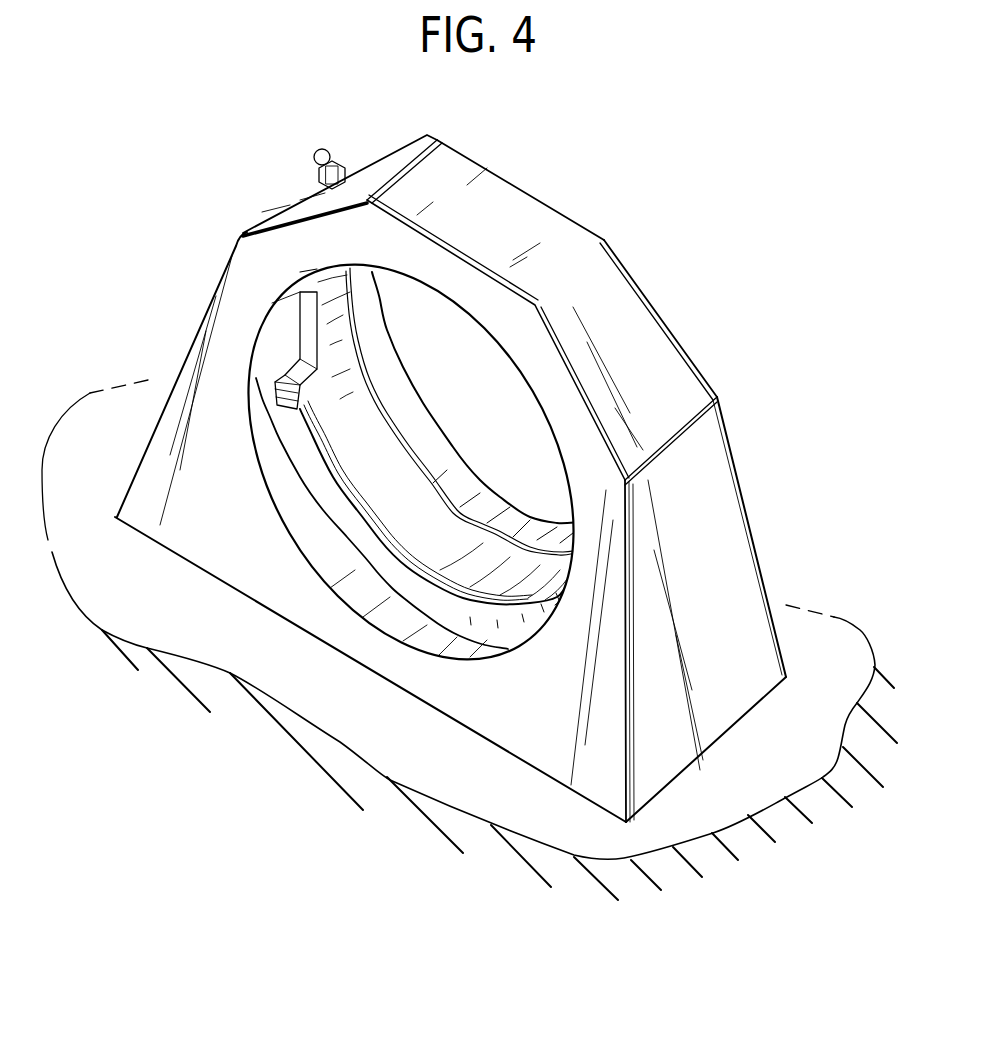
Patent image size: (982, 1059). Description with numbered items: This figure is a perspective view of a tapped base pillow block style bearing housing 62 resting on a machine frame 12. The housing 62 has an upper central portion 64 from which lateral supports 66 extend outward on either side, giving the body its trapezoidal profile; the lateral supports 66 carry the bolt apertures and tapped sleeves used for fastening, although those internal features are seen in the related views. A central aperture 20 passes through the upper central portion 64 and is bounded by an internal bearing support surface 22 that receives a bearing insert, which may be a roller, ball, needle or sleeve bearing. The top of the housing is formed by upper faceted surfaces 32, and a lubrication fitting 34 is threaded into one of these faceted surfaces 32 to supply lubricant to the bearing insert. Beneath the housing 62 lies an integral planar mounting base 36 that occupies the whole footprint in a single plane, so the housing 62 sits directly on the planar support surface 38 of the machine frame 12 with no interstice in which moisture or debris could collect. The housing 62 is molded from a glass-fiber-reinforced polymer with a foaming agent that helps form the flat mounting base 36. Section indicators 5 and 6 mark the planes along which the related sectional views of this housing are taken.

The machine frame 12 is at (217, 655).
The central aperture 20 is at (504, 422).
The internal bearing support surface 22 is at (318, 400).
The upper faceted surfaces 32 is at (393, 150).
The lubrication fitting 34 is at (326, 150).
The planar mounting base 36 is at (203, 570).
The planar support surface 38 is at (271, 685).
The tapped base pillow block housing 62 is at (660, 257).
The upper central portion 64 is at (642, 316).
The lateral supports 66 is at (135, 505).
The section line 5- 5 is at (157, 267).
The section line 6- 6 is at (477, 210).